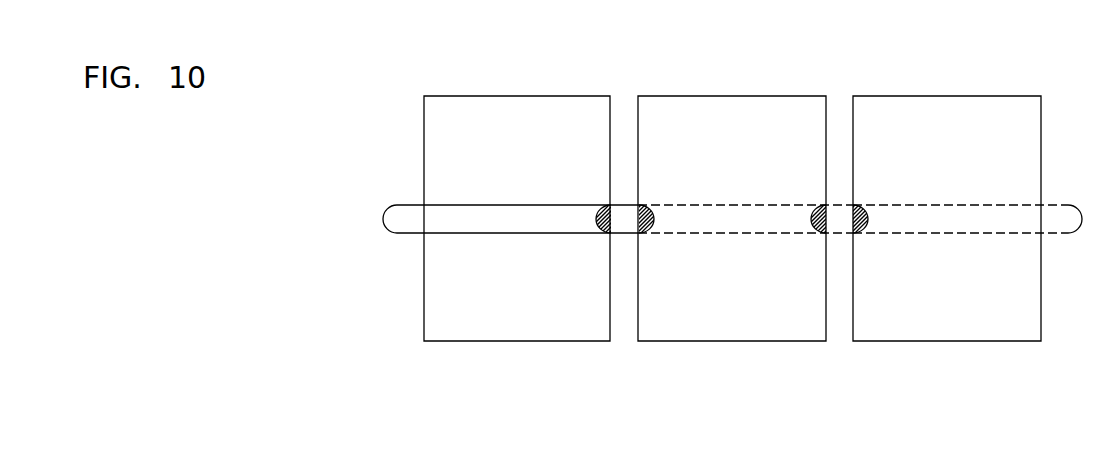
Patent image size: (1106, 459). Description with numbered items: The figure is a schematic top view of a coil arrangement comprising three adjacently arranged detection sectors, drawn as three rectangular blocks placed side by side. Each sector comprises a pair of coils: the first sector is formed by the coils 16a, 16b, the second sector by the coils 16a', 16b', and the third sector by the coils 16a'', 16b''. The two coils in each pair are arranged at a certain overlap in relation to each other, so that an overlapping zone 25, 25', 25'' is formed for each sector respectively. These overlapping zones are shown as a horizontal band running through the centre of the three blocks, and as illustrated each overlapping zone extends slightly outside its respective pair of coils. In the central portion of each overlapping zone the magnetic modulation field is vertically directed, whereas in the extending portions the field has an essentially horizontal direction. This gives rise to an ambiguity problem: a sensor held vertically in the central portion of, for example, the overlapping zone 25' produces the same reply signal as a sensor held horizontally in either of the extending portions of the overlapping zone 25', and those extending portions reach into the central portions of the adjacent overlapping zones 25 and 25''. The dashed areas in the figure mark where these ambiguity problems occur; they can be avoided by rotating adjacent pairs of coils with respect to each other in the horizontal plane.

The coil 16a is at (517, 315).
The coil 16b is at (517, 129).
The coil 16a' is at (732, 315).
The coil 16b' is at (732, 129).
The coil 16a'' is at (947, 315).
The coil 16b'' is at (947, 126).
The overlapping zone 25 is at (501, 251).
The overlapping zone 25' is at (732, 257).
The overlapping zone 25'' is at (952, 258).